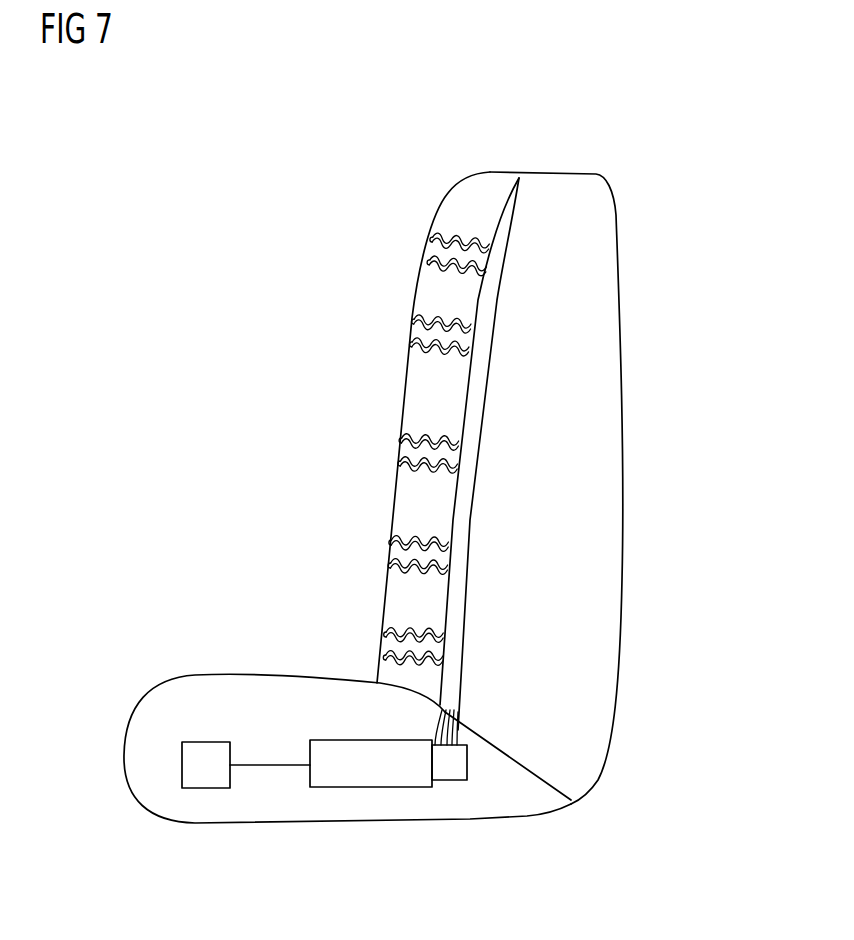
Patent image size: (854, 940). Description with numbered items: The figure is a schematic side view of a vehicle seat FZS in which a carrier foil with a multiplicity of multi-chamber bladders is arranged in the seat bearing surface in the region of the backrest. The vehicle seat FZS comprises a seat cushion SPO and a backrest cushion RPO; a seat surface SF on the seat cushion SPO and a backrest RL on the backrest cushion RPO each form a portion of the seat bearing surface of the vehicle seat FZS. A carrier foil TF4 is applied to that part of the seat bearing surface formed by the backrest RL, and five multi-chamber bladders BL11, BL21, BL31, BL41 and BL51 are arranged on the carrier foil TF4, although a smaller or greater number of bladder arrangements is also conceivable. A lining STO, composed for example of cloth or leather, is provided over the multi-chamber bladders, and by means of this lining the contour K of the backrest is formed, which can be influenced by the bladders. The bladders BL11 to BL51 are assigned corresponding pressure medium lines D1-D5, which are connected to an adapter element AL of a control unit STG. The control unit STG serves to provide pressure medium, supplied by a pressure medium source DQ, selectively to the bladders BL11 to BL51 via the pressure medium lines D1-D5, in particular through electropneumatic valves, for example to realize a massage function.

The vehicle seat FZS is at (565, 822).
The backrest RL is at (403, 382).
The contour of the backrest K is at (413, 278).
The backrest cushion RPO is at (597, 580).
The carrier foil TF4 is at (515, 202).
The lining STO is at (460, 203).
The multi-chamber bladder BL11 is at (437, 243).
The multi-chamber bladder BL21 is at (413, 333).
The multi-chamber bladder BL31 is at (400, 454).
The multi-chamber bladder BL41 is at (393, 557).
The multi-chamber bladder BL51 is at (390, 645).
The seat surface SF is at (196, 675).
The pressure medium lines D1-D5 is at (458, 733).
The adapter element AL is at (448, 768).
The control unit STG is at (347, 775).
The seat cushion SPO is at (268, 787).
The pressure medium source DQ is at (208, 777).